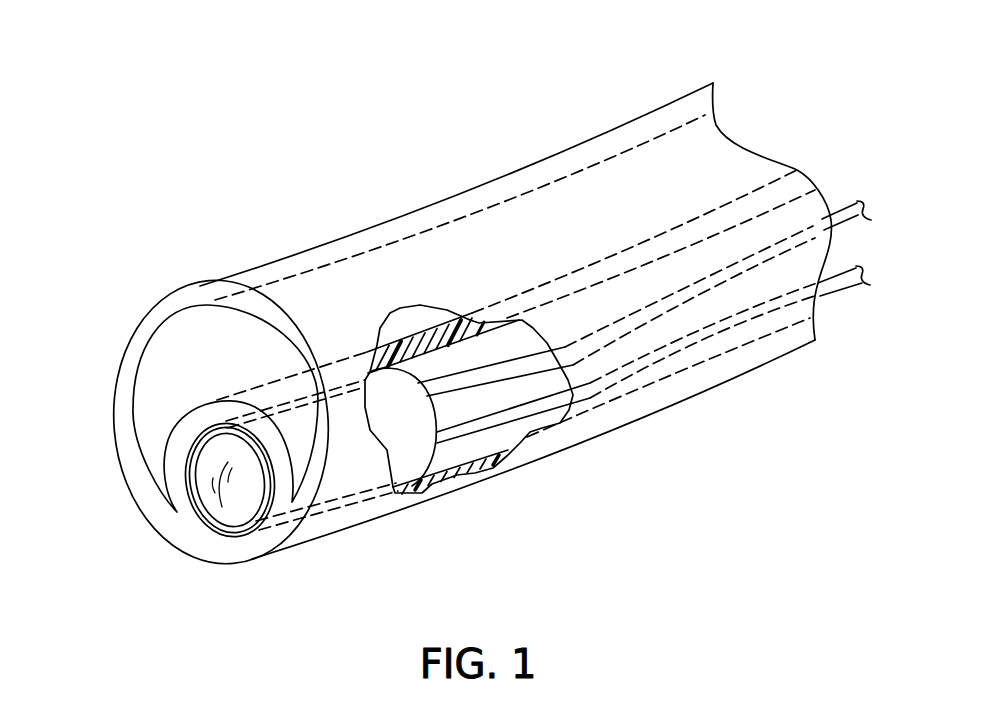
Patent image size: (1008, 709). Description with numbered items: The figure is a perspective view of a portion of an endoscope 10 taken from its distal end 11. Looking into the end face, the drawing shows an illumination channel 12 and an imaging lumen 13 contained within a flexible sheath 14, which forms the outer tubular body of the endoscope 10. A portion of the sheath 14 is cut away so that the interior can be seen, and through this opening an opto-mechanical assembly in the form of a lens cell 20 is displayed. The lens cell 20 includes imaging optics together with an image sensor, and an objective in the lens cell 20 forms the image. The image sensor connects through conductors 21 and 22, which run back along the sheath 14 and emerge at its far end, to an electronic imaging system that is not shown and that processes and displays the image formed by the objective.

The endoscope 10 is at (349, 99).
The distal end 11 is at (79, 515).
The illumination channel 12 is at (155, 370).
The imaging lumen 13 is at (253, 533).
The flexible sheath 14 is at (318, 257).
The lens cell 20 is at (400, 452).
The conductor 21 is at (483, 423).
The conductor 22 is at (523, 362).